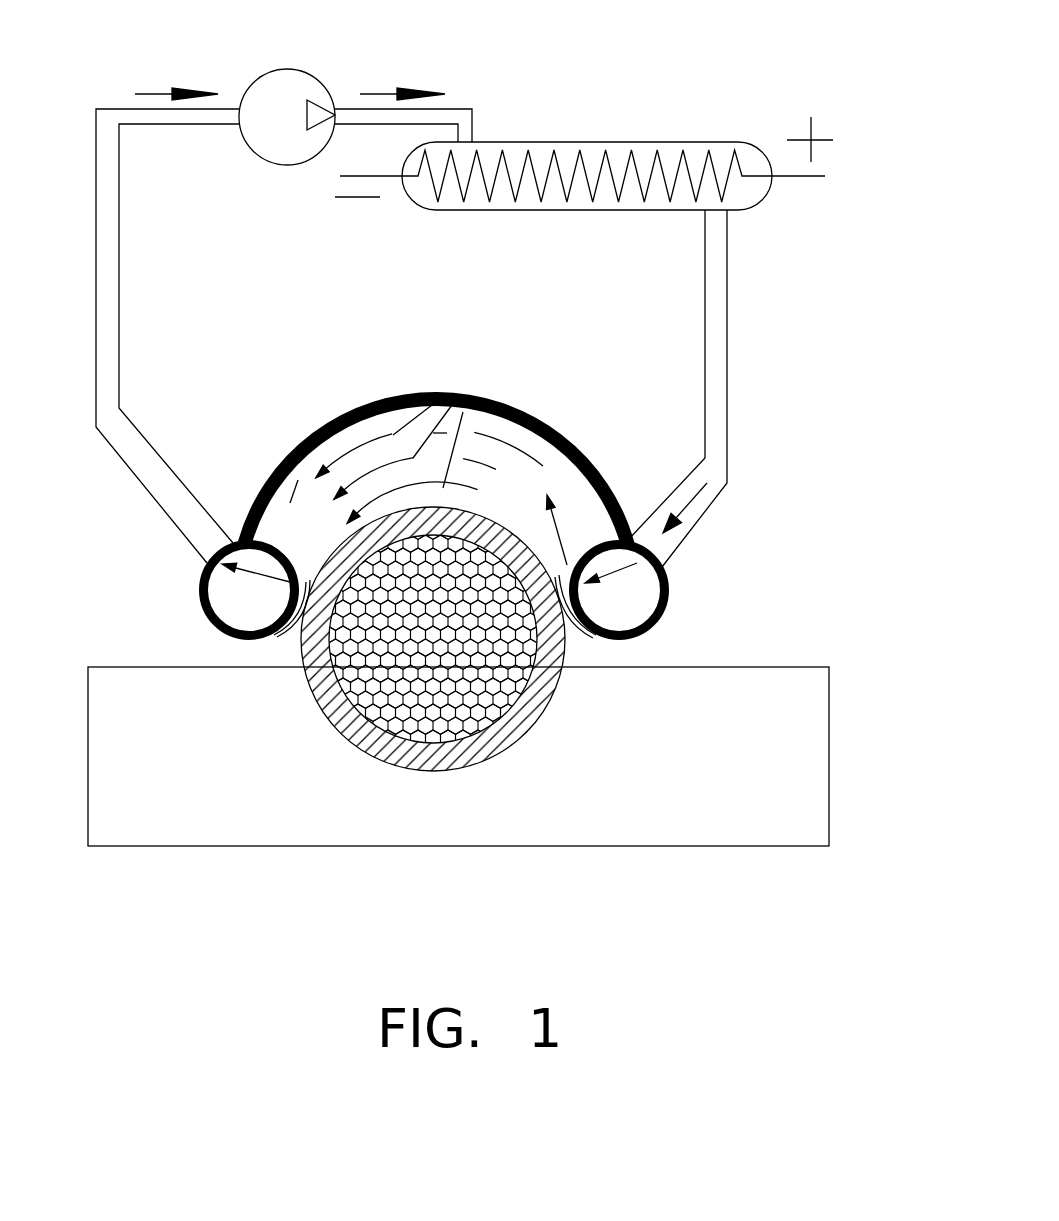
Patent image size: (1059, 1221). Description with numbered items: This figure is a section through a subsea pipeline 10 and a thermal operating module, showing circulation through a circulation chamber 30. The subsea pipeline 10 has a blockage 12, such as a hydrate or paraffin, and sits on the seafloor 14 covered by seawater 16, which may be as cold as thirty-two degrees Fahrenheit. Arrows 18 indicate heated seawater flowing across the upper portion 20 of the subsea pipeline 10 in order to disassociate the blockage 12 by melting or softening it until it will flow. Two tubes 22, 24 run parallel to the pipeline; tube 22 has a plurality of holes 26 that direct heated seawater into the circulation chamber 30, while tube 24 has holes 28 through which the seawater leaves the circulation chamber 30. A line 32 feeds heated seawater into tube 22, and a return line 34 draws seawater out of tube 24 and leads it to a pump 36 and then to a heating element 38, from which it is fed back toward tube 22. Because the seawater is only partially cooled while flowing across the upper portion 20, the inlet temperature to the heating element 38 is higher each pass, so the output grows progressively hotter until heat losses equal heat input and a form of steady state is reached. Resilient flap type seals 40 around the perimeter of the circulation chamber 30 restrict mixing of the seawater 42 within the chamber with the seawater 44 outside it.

The subsea pipeline 10 is at (432, 755).
The blockage 12 is at (488, 697).
The seafloor 14 is at (770, 667).
The seawater 16 is at (813, 477).
The arrows 18 is at (452, 390).
The upper portion 20 is at (488, 530).
The tube 22 is at (668, 598).
The tube 24 is at (195, 583).
The holes 26 is at (290, 582).
The holes 28 is at (585, 585).
The circulation chamber 30 is at (557, 470).
The line 32 is at (722, 447).
The return line 34 is at (145, 447).
The pump 36 is at (287, 83).
The heating element 38 is at (560, 158).
The resilient flap type seals 40 is at (285, 637).
The seawater within the circulation chamber 42 is at (320, 503).
The seawater outside the circulation chamber 44 is at (120, 502).